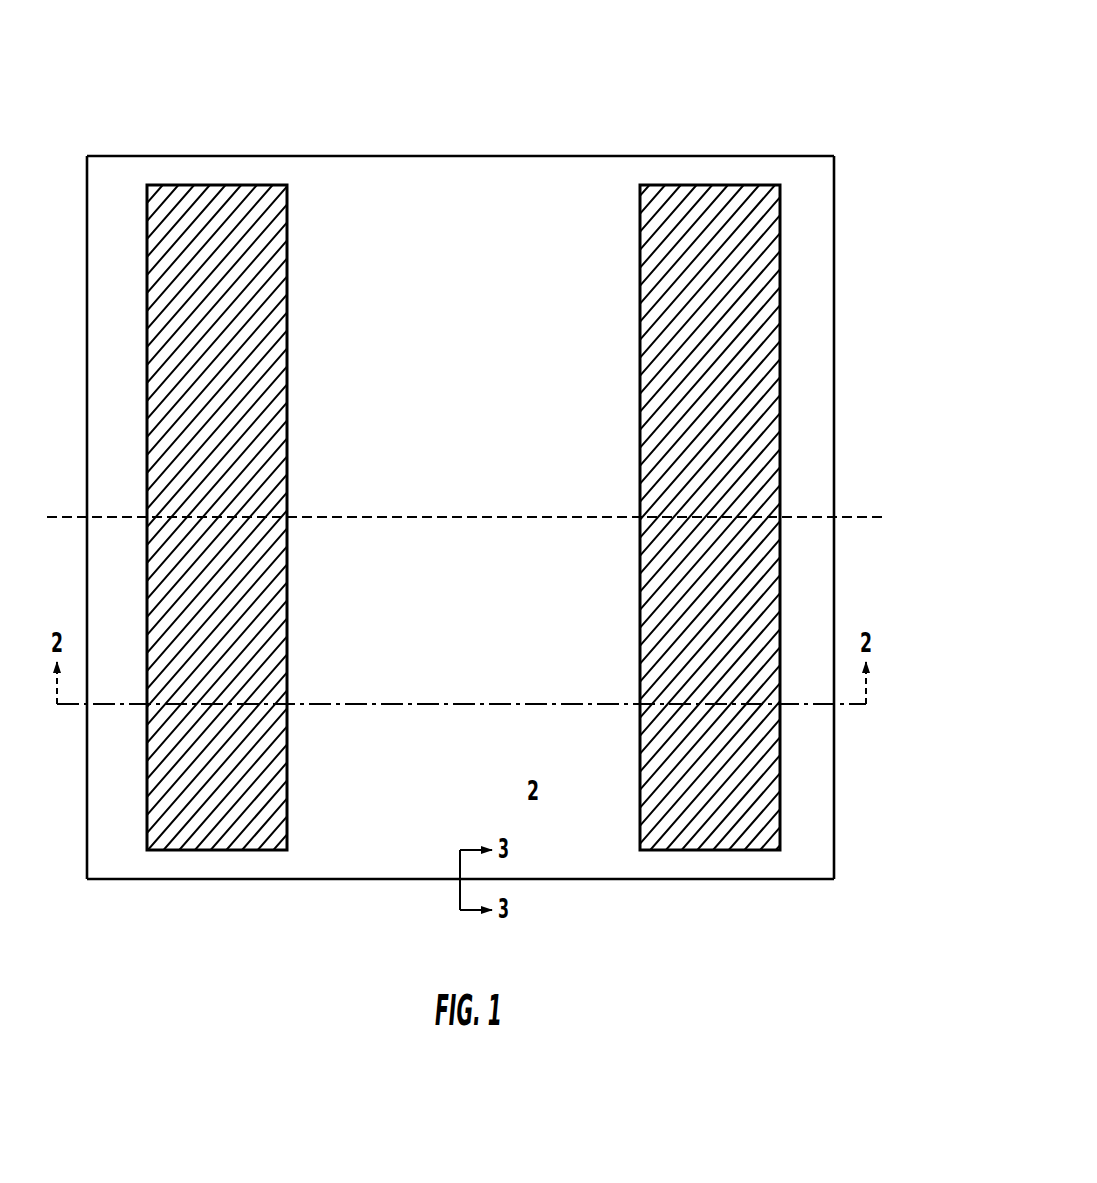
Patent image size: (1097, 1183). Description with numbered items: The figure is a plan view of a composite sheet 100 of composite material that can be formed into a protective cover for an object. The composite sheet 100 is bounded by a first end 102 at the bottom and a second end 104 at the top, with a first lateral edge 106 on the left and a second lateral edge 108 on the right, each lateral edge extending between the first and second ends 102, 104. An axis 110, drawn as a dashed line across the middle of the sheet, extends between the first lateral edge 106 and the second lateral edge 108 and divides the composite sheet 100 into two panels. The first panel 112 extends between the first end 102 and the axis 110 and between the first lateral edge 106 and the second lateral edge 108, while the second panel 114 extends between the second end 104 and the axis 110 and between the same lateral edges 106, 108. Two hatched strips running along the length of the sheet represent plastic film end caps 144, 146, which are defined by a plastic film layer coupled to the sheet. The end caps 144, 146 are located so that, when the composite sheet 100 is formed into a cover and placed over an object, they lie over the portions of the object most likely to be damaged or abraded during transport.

The composite sheet 100 is at (677, 88).
The first end 102 is at (617, 883).
The second end 104 is at (497, 152).
The first lateral edge 106 is at (84, 447).
The second lateral edge 108 is at (838, 366).
The axis 110 is at (445, 515).
The first panel 112 is at (463, 630).
The second panel 114 is at (460, 349).
The plastic film end cap 144 is at (258, 273).
The plastic film end cap 146 is at (670, 268).